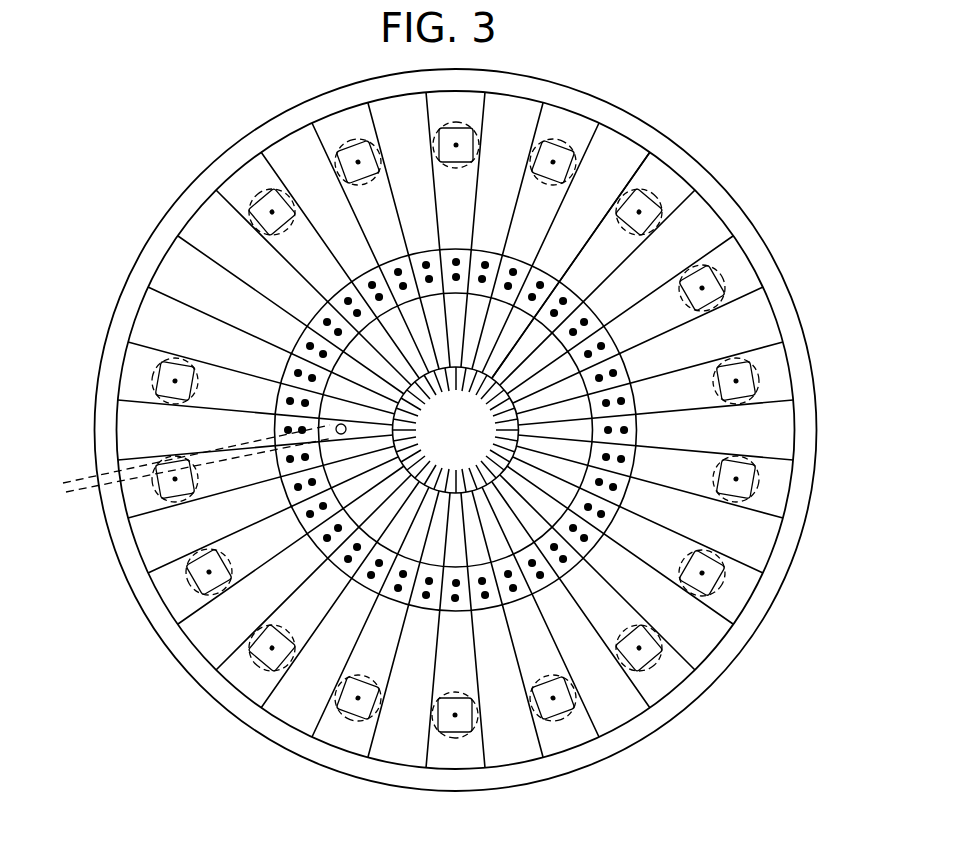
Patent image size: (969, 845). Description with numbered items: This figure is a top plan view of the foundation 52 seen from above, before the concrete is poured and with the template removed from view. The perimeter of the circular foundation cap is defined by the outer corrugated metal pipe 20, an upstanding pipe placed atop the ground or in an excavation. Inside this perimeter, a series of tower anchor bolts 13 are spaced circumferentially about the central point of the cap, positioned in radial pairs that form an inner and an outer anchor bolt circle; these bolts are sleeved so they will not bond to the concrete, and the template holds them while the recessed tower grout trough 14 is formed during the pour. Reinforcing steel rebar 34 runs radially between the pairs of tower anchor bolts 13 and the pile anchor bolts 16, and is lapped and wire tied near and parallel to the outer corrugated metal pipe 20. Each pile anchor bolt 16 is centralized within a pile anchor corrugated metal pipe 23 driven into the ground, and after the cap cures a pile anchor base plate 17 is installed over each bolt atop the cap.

The tower anchor bolts 13 is at (285, 120).
The recessed tower grout trough 14 is at (633, 385).
The pile anchor bolts 16 is at (272, 212).
The pile anchor base plates 17 is at (188, 585).
The outer corrugated metal pipe 20 is at (815, 488).
The pile anchor corrugated metal pipe 23 is at (258, 668).
The reinforcing steel rebar 34 is at (575, 250).
The foundation 52 is at (805, 635).